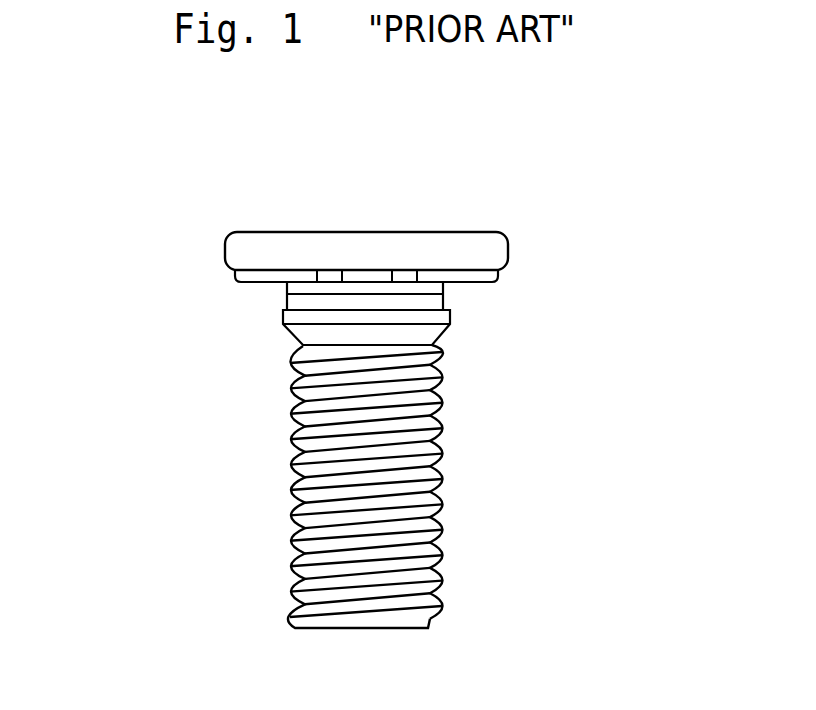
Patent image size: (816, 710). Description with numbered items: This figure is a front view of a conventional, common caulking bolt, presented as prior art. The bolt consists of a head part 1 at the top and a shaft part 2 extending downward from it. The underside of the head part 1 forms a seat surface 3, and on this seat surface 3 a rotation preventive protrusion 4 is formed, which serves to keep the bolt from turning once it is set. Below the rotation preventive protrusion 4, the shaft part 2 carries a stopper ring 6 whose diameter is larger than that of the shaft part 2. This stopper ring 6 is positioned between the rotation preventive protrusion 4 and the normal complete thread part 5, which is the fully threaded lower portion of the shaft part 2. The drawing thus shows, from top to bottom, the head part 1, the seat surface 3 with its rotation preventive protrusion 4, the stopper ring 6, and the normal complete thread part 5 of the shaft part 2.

The head part 1 is at (512, 249).
The shaft part 2 is at (440, 505).
The seat surface 3 is at (463, 268).
The rotation preventive protrusion 4 is at (497, 273).
The normal complete thread part 5 is at (290, 463).
The stopper ring 6 is at (282, 320).